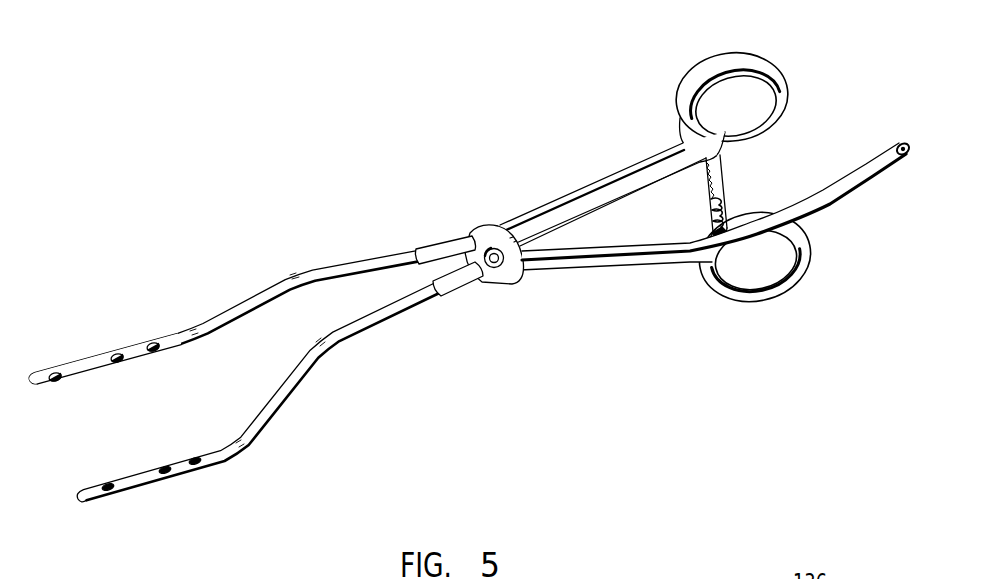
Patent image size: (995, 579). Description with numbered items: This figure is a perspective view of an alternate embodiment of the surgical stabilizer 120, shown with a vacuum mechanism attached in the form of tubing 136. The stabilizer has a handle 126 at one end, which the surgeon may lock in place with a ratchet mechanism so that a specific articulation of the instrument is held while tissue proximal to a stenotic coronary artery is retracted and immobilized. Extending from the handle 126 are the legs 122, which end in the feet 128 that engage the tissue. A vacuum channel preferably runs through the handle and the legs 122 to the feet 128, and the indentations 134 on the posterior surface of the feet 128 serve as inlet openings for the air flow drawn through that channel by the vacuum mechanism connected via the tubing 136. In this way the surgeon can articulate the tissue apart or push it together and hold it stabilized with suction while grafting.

The surgical stabilizer 120 is at (507, 302).
The legs 122 is at (367, 267).
The handle 126 is at (777, 25).
The feet 128 is at (193, 312).
The indentations 134 is at (157, 483).
The tubing 136 is at (810, 212).